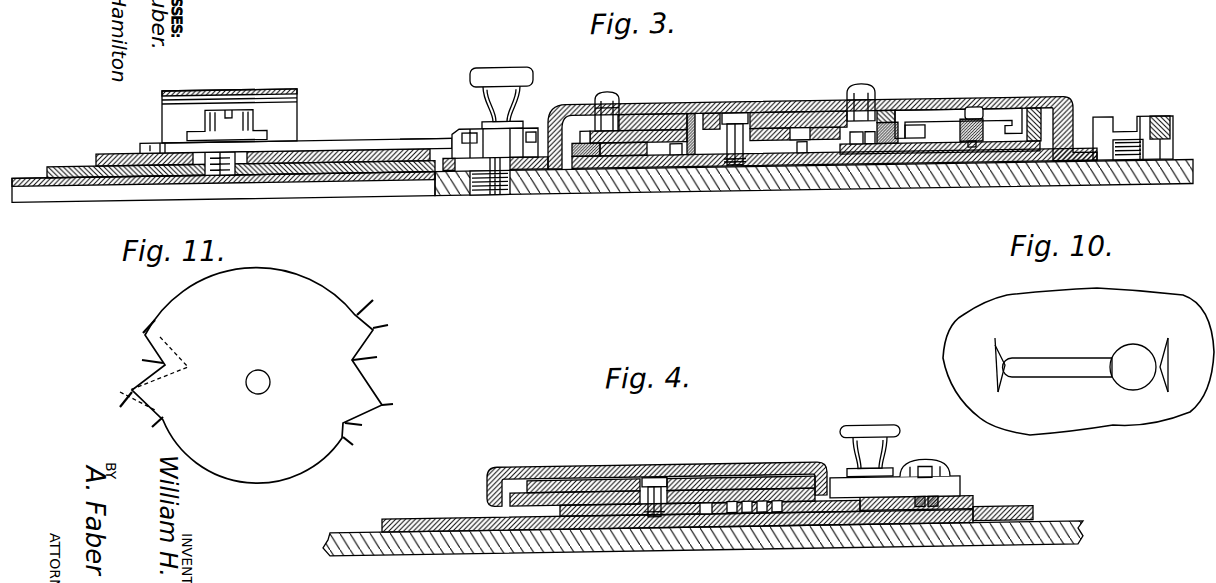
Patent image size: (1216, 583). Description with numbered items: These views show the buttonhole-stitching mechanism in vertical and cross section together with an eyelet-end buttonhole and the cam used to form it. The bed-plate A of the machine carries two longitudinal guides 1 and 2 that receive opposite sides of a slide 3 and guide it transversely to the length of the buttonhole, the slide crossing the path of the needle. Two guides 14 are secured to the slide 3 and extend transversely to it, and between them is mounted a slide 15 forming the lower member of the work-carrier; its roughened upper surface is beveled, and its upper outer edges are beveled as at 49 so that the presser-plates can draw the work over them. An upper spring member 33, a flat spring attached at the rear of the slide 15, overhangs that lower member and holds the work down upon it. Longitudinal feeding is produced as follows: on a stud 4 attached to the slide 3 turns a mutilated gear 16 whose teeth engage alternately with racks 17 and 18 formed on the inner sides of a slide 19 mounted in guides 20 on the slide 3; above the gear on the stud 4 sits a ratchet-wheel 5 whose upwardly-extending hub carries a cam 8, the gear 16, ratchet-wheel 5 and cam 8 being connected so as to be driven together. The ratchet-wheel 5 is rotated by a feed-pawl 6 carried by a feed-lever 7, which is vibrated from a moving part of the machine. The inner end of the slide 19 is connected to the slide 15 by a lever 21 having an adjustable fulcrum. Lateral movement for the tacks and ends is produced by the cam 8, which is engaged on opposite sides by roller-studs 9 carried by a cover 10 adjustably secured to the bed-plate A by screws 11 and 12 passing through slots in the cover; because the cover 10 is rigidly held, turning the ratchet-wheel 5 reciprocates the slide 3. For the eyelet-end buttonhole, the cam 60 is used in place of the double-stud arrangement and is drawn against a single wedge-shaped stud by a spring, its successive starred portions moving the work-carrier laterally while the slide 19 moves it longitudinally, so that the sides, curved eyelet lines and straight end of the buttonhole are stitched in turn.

In FIG. 3, the bed-plate A is at (750, 186).
In FIG. 4, the bed-plate A is at (731, 544).
In FIG. 11, the guide 1 is at (139, 321).
In FIG. 10, the guide 1 is at (1012, 380).
In FIG. 4, the guide 1 is at (428, 520).
In FIG. 11, the guide 2 is at (378, 302).
In FIG. 10, the guide 2 is at (1104, 390).
In FIG. 4, the guide 2 is at (1008, 517).
In FIG. 3, the slide 3 is at (659, 159).
In FIG. 11, the slide 3 is at (393, 326).
In FIG. 10, the slide 3 is at (1139, 399).
In FIG. 4, the slide 3 is at (568, 527).
In FIG. 3, the stud 4 is at (730, 146).
In FIG. 11, the stud 4 is at (378, 357).
In FIG. 10, the stud 4 is at (1181, 356).
In FIG. 4, the stud 4 is at (650, 516).
In FIG. 3, the ratchet-wheel 5 is at (628, 139).
In FIG. 11, the ratchet-wheel 5 is at (399, 404).
In FIG. 10, the ratchet-wheel 5 is at (1180, 369).
In FIG. 4, the ratchet-wheel 5 is at (535, 492).
In FIG. 3, the feed-pawl 6 is at (914, 145).
In FIG. 11, the feed-pawl 6 is at (366, 429).
In FIG. 10, the feed-pawl 6 is at (1134, 333).
In FIG. 3, the feed-lever 7 is at (958, 125).
In FIG. 11, the feed-lever 7 is at (360, 449).
In FIG. 10, the feed-lever 7 is at (1108, 354).
In FIG. 3, the cam 8 is at (801, 107).
In FIG. 11, the cam 8 is at (151, 433).
In FIG. 10, the cam 8 is at (1010, 358).
In FIG. 3, the roller-studs 9 is at (603, 118).
In FIG. 11, the roller-studs 9 is at (119, 413).
In FIG. 10, the roller-studs 9 is at (996, 380).
In FIG. 3, the cover 10 is at (663, 108).
In FIG. 11, the cover 10 is at (135, 356).
In FIG. 10, the cover 10 is at (995, 348).
In FIG. 4, the cover 10 is at (731, 466).
In FIG. 3, the screw 11 is at (478, 149).
In FIG. 3, the screw 12 is at (1119, 136).
In FIG. 3, the guides 14 is at (336, 150).
In FIG. 3, the slide 15 is at (113, 145).
In FIG. 3, the mutilated gear 16 is at (773, 153).
In FIG. 4, the mutilated gear 16 is at (690, 515).
In FIG. 3, the rack 17 is at (681, 151).
In FIG. 4, the rack 17 is at (765, 507).
In FIG. 3, the rack 18 is at (802, 186).
In FIG. 4, the slide 19 is at (567, 513).
In FIG. 3, the guides 20 is at (588, 150).
In FIG. 3, the lever 21 is at (401, 135).
In FIG. 4, the lever 21 is at (954, 492).
In FIG. 3, the upper spring member 33 is at (260, 86).
In FIG. 3, the beveled edges 49 is at (147, 150).
In FIG. 11, the cam 60 is at (251, 376).